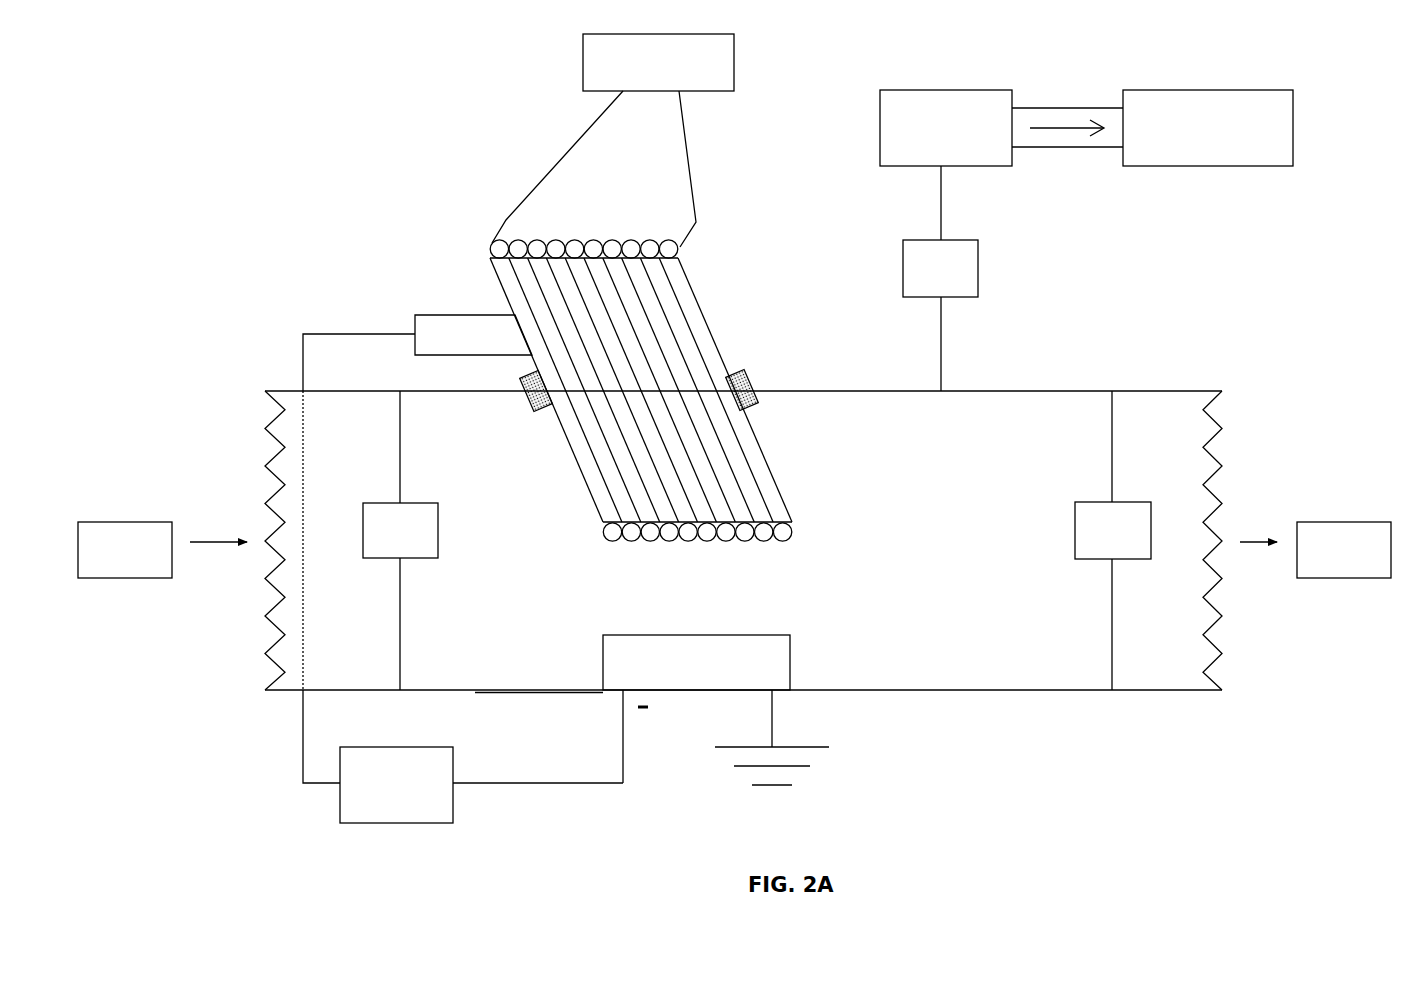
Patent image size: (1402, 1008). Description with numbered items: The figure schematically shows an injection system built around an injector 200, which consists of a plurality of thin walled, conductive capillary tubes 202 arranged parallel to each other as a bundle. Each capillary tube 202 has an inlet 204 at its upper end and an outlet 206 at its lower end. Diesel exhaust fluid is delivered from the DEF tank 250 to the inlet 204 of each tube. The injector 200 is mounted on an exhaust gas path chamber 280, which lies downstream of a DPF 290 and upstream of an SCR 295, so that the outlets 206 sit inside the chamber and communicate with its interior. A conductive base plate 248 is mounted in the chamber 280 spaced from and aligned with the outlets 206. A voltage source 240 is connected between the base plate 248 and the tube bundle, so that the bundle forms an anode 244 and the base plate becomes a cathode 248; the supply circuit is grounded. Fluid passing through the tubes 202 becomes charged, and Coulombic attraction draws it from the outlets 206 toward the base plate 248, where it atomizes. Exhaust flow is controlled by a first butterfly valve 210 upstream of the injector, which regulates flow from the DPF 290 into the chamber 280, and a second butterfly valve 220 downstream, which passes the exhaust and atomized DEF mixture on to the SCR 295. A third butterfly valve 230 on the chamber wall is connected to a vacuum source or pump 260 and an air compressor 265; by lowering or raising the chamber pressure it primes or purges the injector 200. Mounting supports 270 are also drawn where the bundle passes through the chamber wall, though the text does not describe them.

The injector 200 is at (594, 379).
The capillary tube 202 is at (678, 295).
The inlet 204 is at (492, 242).
The outlet 206 is at (622, 540).
The first butterfly valve 210 is at (438, 522).
The second butterfly valve 220 is at (1075, 538).
The third butterfly valve 230 is at (978, 258).
The voltage source 240 is at (453, 802).
The anode 244 is at (452, 314).
The base plate 248 is at (603, 672).
The DEF tank 250 is at (583, 53).
The pump 260 is at (935, 88).
The air compressor 265 is at (1218, 88).
The insulating support 270 is at (548, 408).
The exhaust gas path chamber 280 is at (897, 690).
The DPF 290 is at (135, 578).
The SCR 295 is at (1333, 578).